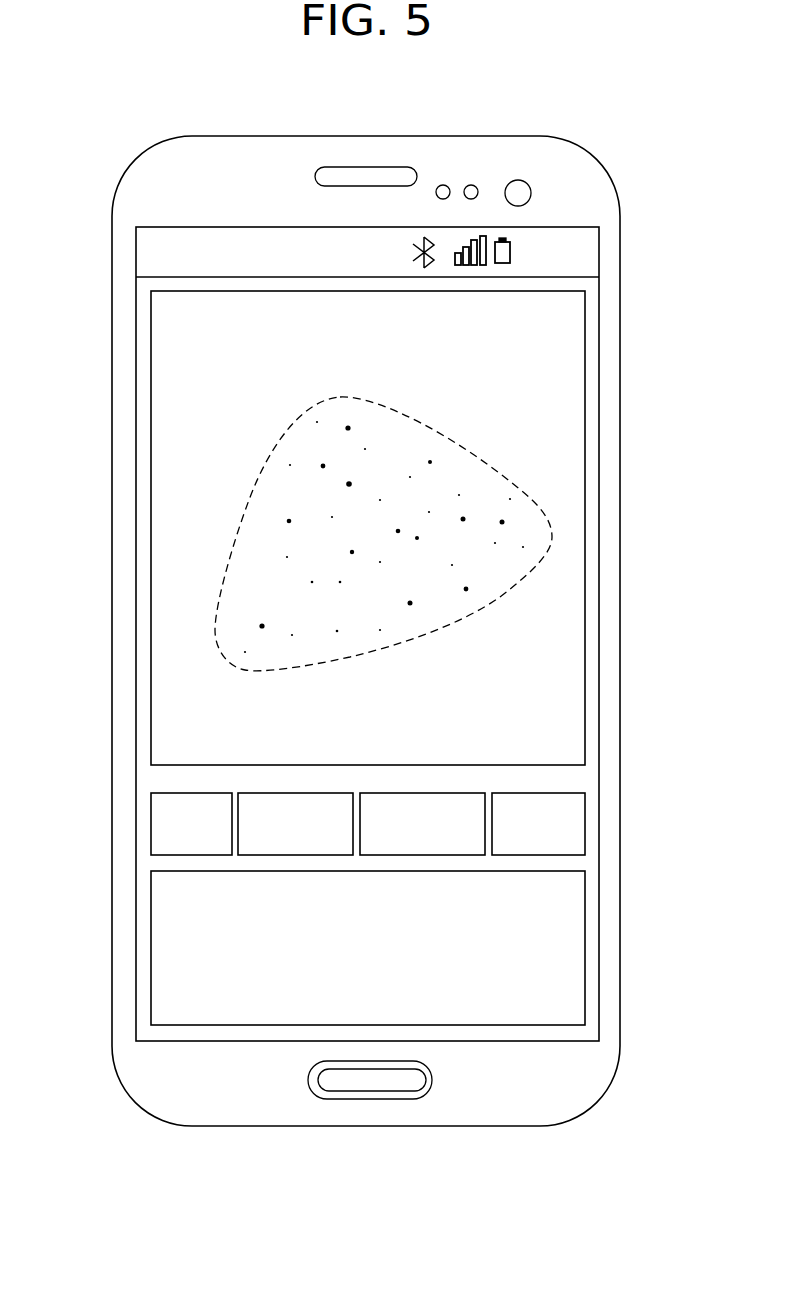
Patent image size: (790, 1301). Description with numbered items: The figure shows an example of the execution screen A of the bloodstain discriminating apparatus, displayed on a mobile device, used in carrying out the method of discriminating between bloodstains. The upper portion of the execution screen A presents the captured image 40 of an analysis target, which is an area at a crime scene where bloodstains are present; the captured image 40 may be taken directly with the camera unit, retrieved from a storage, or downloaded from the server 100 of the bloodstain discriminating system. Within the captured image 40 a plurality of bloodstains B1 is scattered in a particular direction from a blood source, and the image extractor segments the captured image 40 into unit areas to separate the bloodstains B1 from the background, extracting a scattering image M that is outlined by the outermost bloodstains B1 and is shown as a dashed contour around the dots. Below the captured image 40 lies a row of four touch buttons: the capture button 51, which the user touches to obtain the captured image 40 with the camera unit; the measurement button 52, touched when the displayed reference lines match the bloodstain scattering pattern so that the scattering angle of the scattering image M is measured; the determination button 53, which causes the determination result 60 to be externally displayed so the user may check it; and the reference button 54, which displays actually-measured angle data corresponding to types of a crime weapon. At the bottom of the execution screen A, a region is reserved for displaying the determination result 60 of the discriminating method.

The server 100 is at (368, 135).
The execution screen A is at (608, 285).
The captured image 40 is at (585, 433).
The scattering image M is at (551, 537).
The bloodstain B1 is at (250, 525).
The capture button 51 is at (151, 823).
The measurement button 52 is at (267, 793).
The determination button 53 is at (457, 793).
The reference button 54 is at (585, 823).
The determination result 60 is at (585, 949).